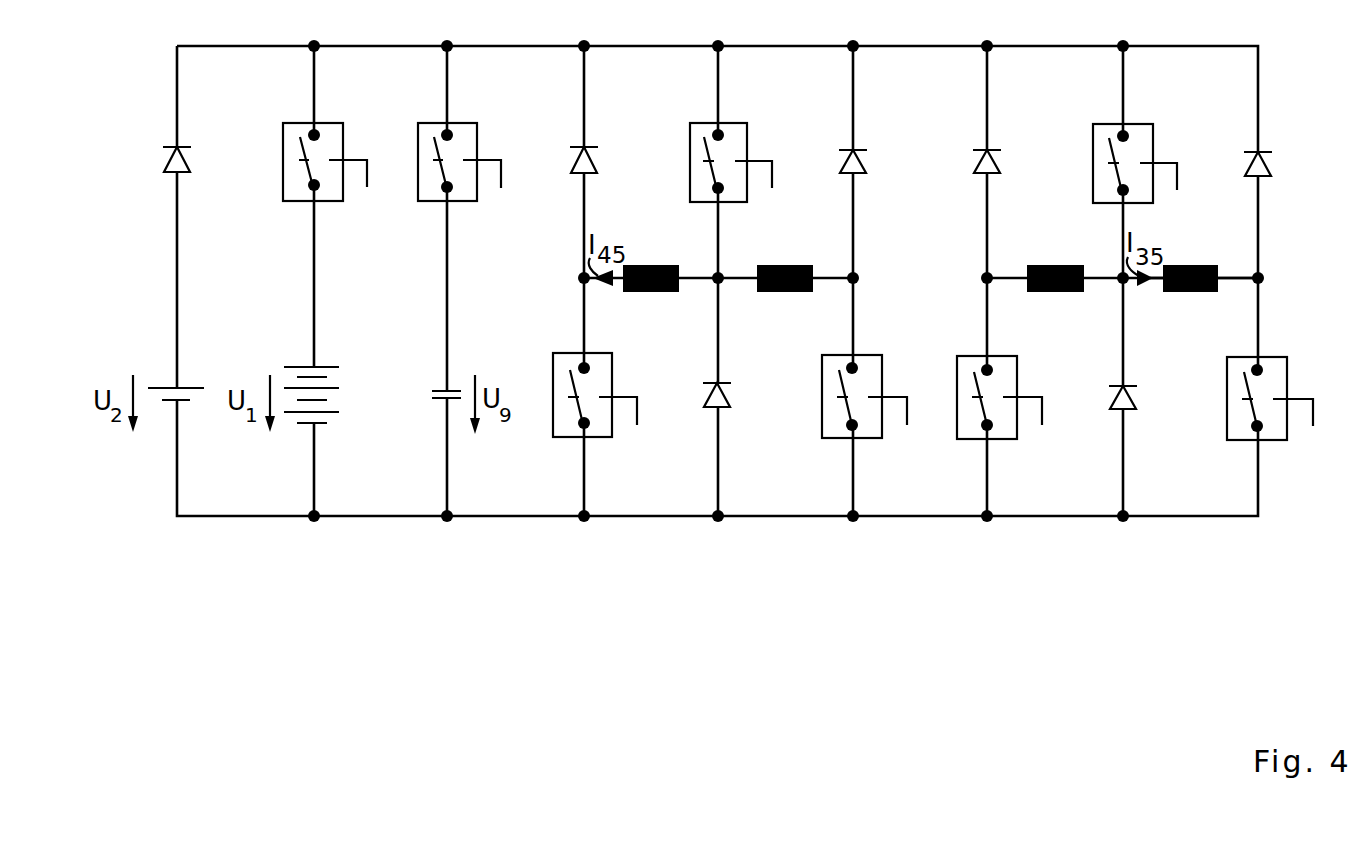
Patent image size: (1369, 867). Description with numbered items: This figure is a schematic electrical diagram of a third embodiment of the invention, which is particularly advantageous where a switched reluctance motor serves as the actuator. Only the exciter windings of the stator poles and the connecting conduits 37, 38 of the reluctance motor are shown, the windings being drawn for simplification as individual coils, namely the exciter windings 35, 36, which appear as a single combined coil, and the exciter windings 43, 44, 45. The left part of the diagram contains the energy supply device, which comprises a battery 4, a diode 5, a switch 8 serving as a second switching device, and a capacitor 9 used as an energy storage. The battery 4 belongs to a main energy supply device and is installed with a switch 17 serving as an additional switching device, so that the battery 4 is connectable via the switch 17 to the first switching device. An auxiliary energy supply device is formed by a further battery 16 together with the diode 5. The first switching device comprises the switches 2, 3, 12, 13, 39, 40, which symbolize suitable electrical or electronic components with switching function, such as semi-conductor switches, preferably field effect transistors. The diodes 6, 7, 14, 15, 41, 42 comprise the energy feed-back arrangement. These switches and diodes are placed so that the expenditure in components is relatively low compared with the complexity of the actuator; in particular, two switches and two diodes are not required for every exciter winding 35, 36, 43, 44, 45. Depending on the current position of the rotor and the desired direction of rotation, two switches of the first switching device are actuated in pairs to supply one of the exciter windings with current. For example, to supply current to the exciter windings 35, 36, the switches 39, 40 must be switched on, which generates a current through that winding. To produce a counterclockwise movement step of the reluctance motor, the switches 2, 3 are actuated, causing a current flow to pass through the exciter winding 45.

The first switch 2 is at (612, 368).
The second switch 3 is at (747, 137).
The battery 4 is at (326, 368).
The diode 5 is at (167, 164).
The diode 6 is at (598, 161).
The diode 7 is at (731, 395).
The switch 8 is at (418, 150).
The capacitor 9 is at (438, 397).
The switch 12 is at (882, 368).
The switch 13 is at (1017, 370).
The diode 14 is at (867, 161).
The diode 15 is at (1001, 161).
The battery 16 is at (172, 388).
The switch 17 is at (283, 149).
The exciter winding 35 is at (1213, 240).
The exciter winding 36 is at (1190, 278).
The connecting conduit 37 is at (1152, 287).
The connecting conduit 38 is at (1238, 287).
The switch 39 is at (1153, 133).
The switch 40 is at (1287, 368).
The diode 41 is at (1137, 396).
The diode 42 is at (1272, 166).
The exciter winding 43 is at (1052, 265).
The exciter winding 44 is at (785, 265).
The exciter winding 45 is at (642, 265).